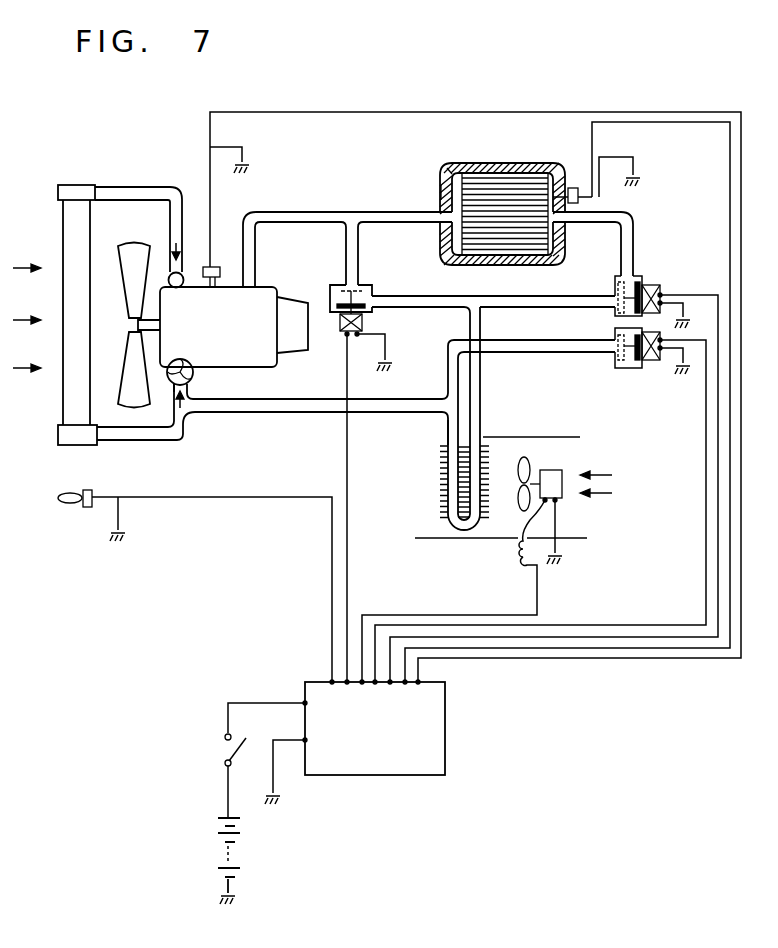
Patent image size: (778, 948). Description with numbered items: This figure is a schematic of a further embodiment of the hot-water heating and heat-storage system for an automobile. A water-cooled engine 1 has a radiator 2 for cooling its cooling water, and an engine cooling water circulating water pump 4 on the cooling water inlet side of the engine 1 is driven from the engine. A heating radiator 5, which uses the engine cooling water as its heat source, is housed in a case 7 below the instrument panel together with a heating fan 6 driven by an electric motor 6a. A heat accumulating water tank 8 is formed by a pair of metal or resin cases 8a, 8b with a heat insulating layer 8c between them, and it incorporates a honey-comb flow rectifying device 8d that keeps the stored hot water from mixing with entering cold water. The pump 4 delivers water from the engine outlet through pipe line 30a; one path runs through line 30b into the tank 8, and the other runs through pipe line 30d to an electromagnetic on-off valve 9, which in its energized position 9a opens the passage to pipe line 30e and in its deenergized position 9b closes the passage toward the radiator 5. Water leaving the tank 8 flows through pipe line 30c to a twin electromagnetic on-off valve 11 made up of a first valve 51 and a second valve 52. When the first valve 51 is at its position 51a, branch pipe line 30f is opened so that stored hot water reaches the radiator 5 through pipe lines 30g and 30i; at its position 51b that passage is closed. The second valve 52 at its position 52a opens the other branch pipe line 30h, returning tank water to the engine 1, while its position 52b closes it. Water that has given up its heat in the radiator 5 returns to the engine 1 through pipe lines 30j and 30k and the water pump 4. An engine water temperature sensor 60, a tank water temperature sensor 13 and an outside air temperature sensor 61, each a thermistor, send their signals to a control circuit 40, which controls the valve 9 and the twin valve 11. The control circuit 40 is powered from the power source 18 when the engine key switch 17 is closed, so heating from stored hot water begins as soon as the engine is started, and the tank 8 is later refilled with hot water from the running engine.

The water-cooled engine 1 is at (269, 291).
The radiator 2 is at (68, 186).
The engine cooling water circulating water pump 4 is at (193, 370).
The heating radiator 5 is at (439, 500).
The heating fan 6 is at (520, 468).
The electric motor 6a is at (550, 471).
The case for heating system 7 is at (578, 441).
The heat accumulating water tank 8 is at (482, 191).
The inner case 8a is at (537, 164).
The outer case 8b is at (441, 170).
The heat insulating layer 8c is at (439, 191).
The honey-comb flow rectifying device 8d is at (504, 180).
The electromagnetic on-off valve 9 is at (359, 473).
The valve position 9a is at (365, 312).
The valve position 9b is at (364, 290).
The twin electromagnetic on-off valve 11 is at (546, 462).
The heat accumulating water tank water temperature sensor 13 is at (574, 187).
The engine key switch 17 is at (223, 752).
The power source 18 is at (216, 838).
The pipe line 30a is at (322, 209).
The pipe line 30b is at (393, 210).
The pipe line 30c is at (636, 230).
The pipe line 30d is at (358, 242).
The pipe line 30e is at (410, 298).
The branch pipe line 30f is at (507, 298).
The pipe line 30g is at (481, 325).
The branch pipe line 30h is at (491, 355).
The pipe line 30i is at (482, 418).
The pipe line 30j is at (447, 434).
The pipe line 30k is at (296, 414).
The control circuit 40 is at (445, 690).
The first valve 51 is at (554, 475).
The valve position 51a is at (637, 318).
The valve position 51b is at (616, 284).
The second valve 52 is at (540, 505).
The valve position 52a is at (641, 368).
The valve position 52b is at (616, 355).
The engine water temperature sensor 60 is at (225, 264).
The outside air temperature sensor 61 is at (74, 506).